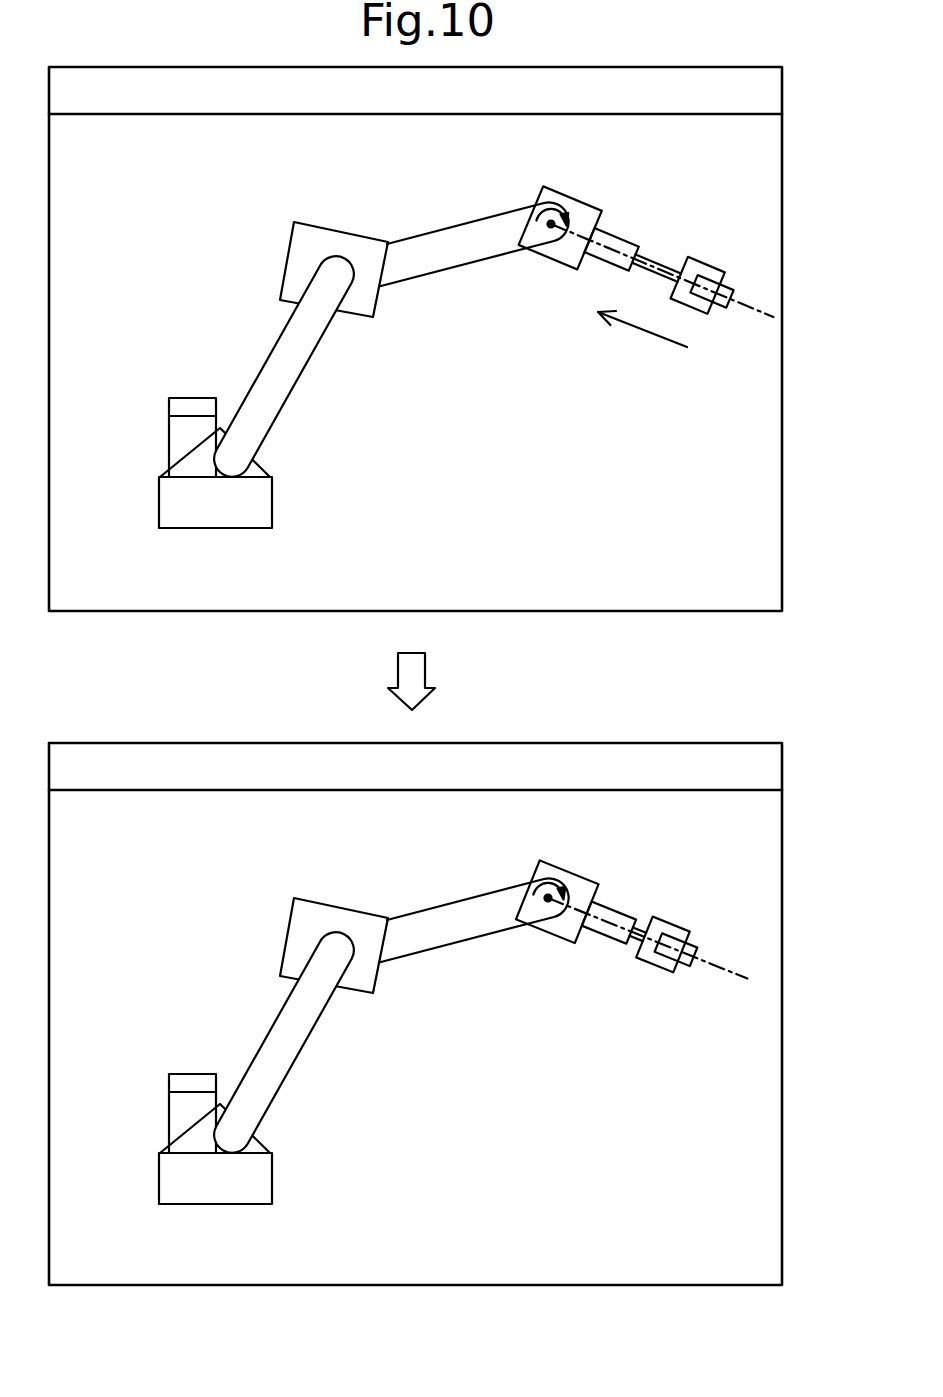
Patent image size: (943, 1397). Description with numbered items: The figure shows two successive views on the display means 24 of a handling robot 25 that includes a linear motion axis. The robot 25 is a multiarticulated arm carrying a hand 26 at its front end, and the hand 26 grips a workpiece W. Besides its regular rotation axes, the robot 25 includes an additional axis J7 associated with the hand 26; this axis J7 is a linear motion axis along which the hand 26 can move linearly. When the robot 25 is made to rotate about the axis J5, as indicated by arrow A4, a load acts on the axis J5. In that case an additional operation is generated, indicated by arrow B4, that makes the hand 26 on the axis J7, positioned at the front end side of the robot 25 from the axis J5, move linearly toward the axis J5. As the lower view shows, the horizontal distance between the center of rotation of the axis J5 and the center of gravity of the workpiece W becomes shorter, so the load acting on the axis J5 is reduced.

The display means 24 is at (782, 170).
The handling robot 25 is at (176, 232).
The axis J5 is at (549, 222).
The arrow A4 is at (559, 196).
The linear motion axis J7 is at (650, 264).
The hand 26 is at (692, 260).
The workpiece W is at (730, 283).
The arrow B4 is at (655, 334).